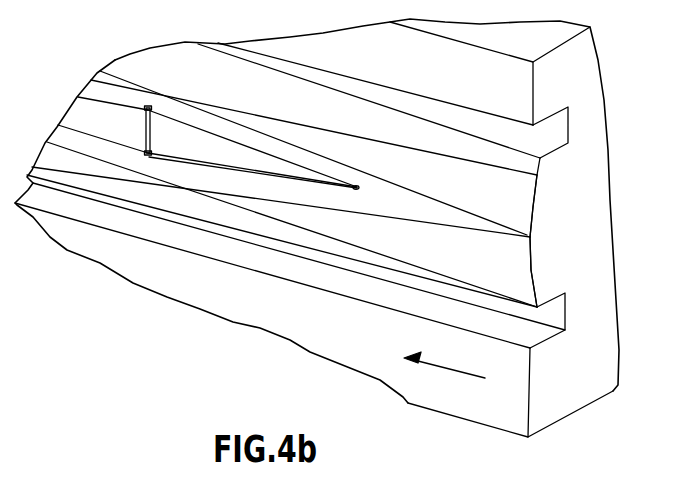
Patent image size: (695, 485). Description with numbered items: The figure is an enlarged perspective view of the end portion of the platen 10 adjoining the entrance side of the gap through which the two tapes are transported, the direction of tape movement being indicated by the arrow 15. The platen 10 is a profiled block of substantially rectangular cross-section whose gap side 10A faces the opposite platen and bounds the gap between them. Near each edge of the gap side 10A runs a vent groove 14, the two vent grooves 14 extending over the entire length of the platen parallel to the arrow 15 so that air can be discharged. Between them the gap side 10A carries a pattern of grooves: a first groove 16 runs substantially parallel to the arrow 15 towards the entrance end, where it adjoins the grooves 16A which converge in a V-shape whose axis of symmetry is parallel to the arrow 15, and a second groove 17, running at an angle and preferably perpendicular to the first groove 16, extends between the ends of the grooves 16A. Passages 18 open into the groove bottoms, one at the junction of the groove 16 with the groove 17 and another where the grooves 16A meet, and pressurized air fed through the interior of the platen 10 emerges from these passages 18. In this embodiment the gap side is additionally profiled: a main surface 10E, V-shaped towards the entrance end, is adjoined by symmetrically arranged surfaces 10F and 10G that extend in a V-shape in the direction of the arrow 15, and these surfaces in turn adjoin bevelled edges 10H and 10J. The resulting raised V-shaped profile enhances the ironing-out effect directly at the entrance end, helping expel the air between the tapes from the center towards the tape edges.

The platen 10 is at (574, 188).
The gap side 10A is at (503, 415).
The main surface 10E is at (448, 208).
The surface 10F is at (522, 270).
The surface 10G is at (527, 208).
The bevelled edge 10H is at (357, 250).
The bevelled edge 10J is at (407, 130).
The vent groove 14 is at (563, 128).
The arrow 15 is at (457, 368).
The first groove 16 is at (107, 142).
The V-shaped groove 16A is at (267, 152).
The second groove 17 is at (145, 130).
The passage 18 is at (148, 105).